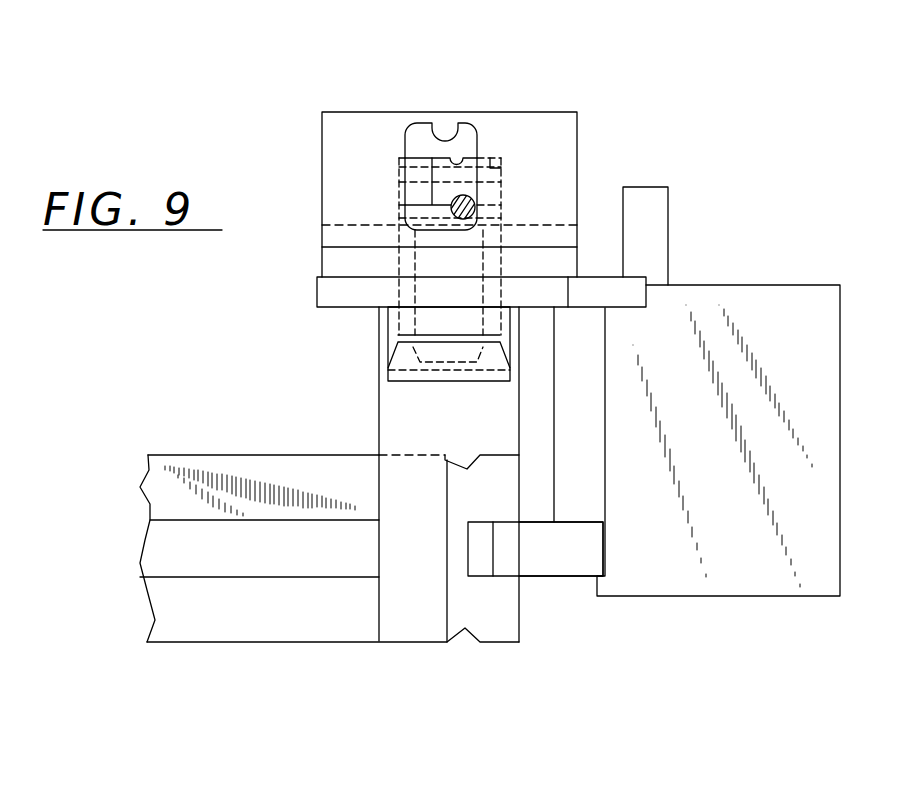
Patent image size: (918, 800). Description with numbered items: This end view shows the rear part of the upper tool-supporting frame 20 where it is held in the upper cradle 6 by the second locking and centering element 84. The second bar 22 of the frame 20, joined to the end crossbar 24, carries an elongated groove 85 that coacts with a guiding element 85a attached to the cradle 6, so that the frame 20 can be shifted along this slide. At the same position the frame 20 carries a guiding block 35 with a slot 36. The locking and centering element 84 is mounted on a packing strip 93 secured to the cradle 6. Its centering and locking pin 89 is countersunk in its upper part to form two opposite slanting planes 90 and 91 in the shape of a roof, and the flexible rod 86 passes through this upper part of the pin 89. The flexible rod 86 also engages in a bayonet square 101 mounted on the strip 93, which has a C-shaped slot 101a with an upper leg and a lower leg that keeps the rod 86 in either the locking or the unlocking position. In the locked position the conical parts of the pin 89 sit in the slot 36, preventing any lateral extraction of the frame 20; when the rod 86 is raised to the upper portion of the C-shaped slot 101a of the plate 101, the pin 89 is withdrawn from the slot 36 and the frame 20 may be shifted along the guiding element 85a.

The second locking and centering element 84 is at (414, 90).
The bayonet square 101 is at (363, 132).
The C-shaped slot 101a is at (464, 140).
The slanting plane 90 is at (492, 156).
The slanting plane 91 is at (418, 217).
The flexible rod 86 is at (475, 200).
The packing strip 93 is at (613, 298).
The upper cradle 6 is at (748, 333).
The centering and locking pin 89 is at (437, 322).
The slot 36 is at (390, 368).
The guiding block 35 is at (410, 433).
The second bar 22 is at (487, 603).
The elongated groove 85 is at (482, 553).
The guiding element 85a is at (575, 548).
The upper tool-supporting frame 20 is at (229, 656).
The crossbar 24 is at (287, 598).